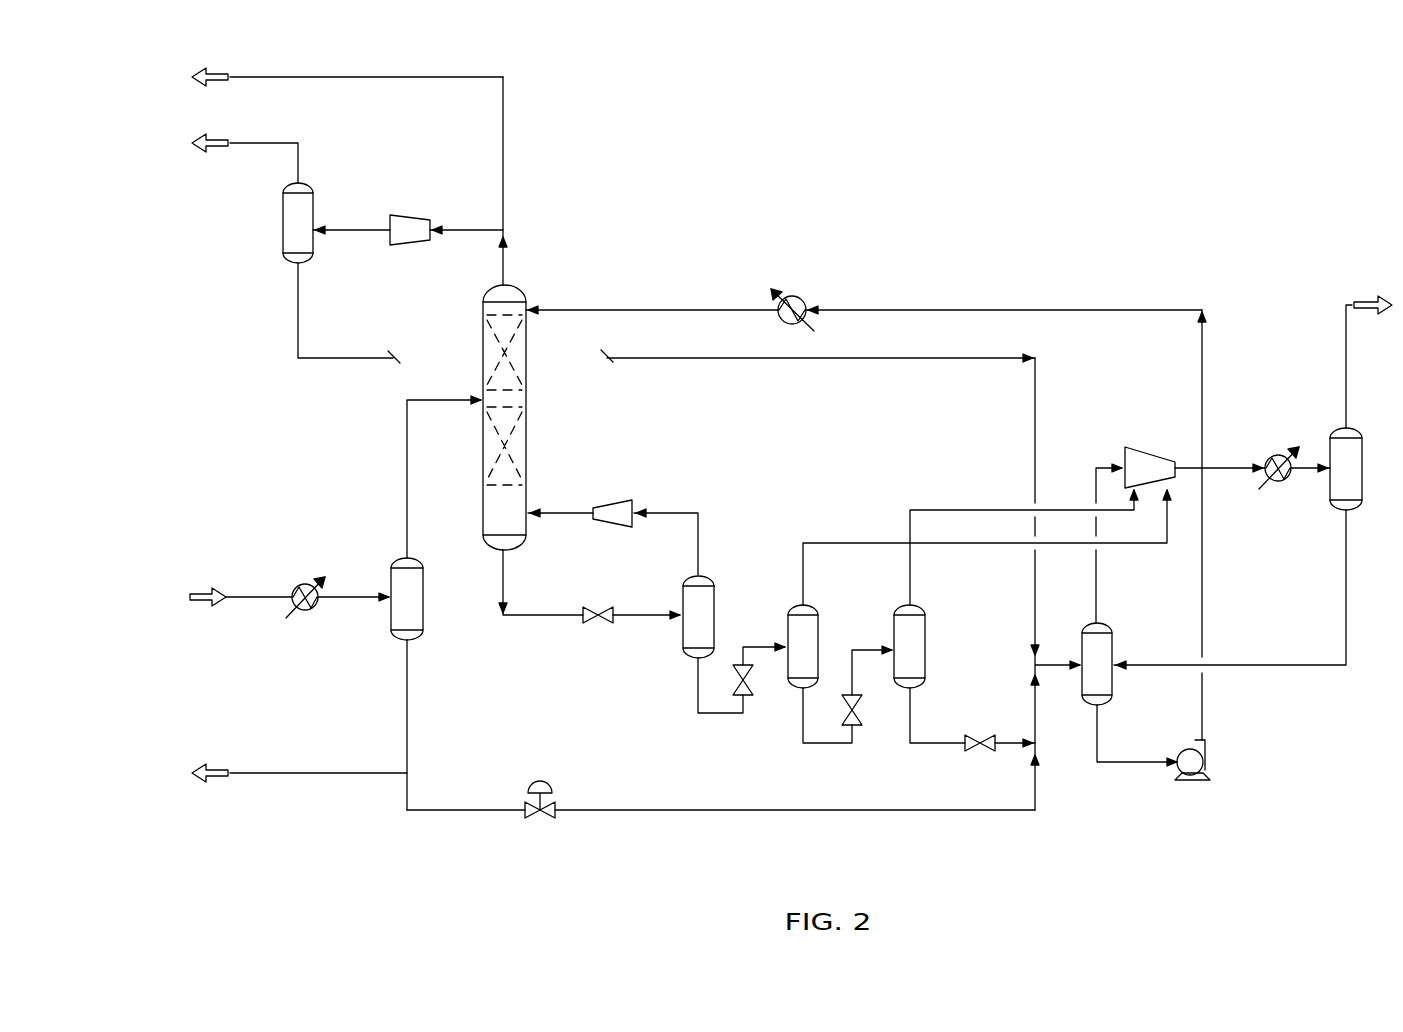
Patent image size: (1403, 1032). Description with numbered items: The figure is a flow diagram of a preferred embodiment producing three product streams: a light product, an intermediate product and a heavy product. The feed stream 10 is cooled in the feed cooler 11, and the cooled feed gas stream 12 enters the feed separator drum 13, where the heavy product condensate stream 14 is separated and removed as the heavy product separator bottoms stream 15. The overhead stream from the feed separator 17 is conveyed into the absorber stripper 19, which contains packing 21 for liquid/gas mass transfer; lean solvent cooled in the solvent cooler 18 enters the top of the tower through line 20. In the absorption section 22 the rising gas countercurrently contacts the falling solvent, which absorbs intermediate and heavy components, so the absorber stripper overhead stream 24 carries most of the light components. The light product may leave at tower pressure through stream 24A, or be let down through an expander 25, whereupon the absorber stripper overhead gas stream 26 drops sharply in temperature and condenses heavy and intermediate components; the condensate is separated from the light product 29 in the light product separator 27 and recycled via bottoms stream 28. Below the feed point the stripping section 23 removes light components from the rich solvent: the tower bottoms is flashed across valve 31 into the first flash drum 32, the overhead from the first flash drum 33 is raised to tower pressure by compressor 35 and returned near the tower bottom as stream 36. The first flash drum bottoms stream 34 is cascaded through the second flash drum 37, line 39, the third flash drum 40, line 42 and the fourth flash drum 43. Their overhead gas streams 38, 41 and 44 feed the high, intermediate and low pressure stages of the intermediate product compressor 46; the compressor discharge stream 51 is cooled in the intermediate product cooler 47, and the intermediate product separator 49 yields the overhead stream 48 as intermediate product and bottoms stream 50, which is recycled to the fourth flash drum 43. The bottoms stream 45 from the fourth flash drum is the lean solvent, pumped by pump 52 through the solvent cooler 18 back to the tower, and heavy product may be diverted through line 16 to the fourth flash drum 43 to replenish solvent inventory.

The feed stream 10 is at (256, 597).
The feed cooler 11 is at (298, 584).
The cooled feed gas stream 12 is at (355, 597).
The feed separator drum 13 is at (423, 590).
The heavy product condensate stream 14 is at (407, 705).
The heavy product separator bottoms stream 15 is at (297, 773).
The line 16 is at (628, 810).
The overhead stream from the feed separator 17 is at (407, 455).
The solvent cooler 18 is at (810, 298).
The absorber stripper 19 is at (516, 290).
The line 20 is at (728, 310).
The packing 21 is at (527, 360).
The absorption section 22 is at (483, 348).
The stripping section 23 is at (483, 462).
The absorber stripper overhead stream 24 is at (473, 230).
The stream 24A is at (420, 77).
The expander 25 is at (412, 215).
The absorber stripper overhead gas stream 26 is at (352, 230).
The light product separator 27 is at (283, 230).
The bottoms stream 28 is at (346, 358).
The light product 29 is at (266, 143).
The valve 31 is at (598, 607).
The first flash drum 32 is at (683, 595).
The overhead from the first flash drum 33 is at (678, 513).
The first flash drum bottoms stream 34 is at (722, 713).
The compressor 35 is at (611, 500).
The stream 36 is at (575, 513).
The second flash drum 37 is at (788, 625).
The overhead gas stream from the second flash drum 38 is at (848, 543).
The line 39 is at (830, 743).
The third flash drum 40 is at (894, 625).
The overhead gas stream from the third flash drum 41 is at (972, 510).
The line 42 is at (935, 743).
The fourth flash drum 43 is at (1112, 640).
The overhead gas stream from the fourth flash drum 44 is at (1103, 468).
The bottoms stream from the fourth flash drum 45 is at (1000, 310).
The intermediate product compressor 46 is at (1145, 447).
The intermediate product cooler 47 is at (1270, 458).
The overhead stream 48 is at (1346, 305).
The intermediate product separator 49 is at (1330, 435).
The bottoms stream 50 is at (1268, 665).
The compressor discharge stream 51 is at (1230, 470).
The pump 52 is at (1182, 750).